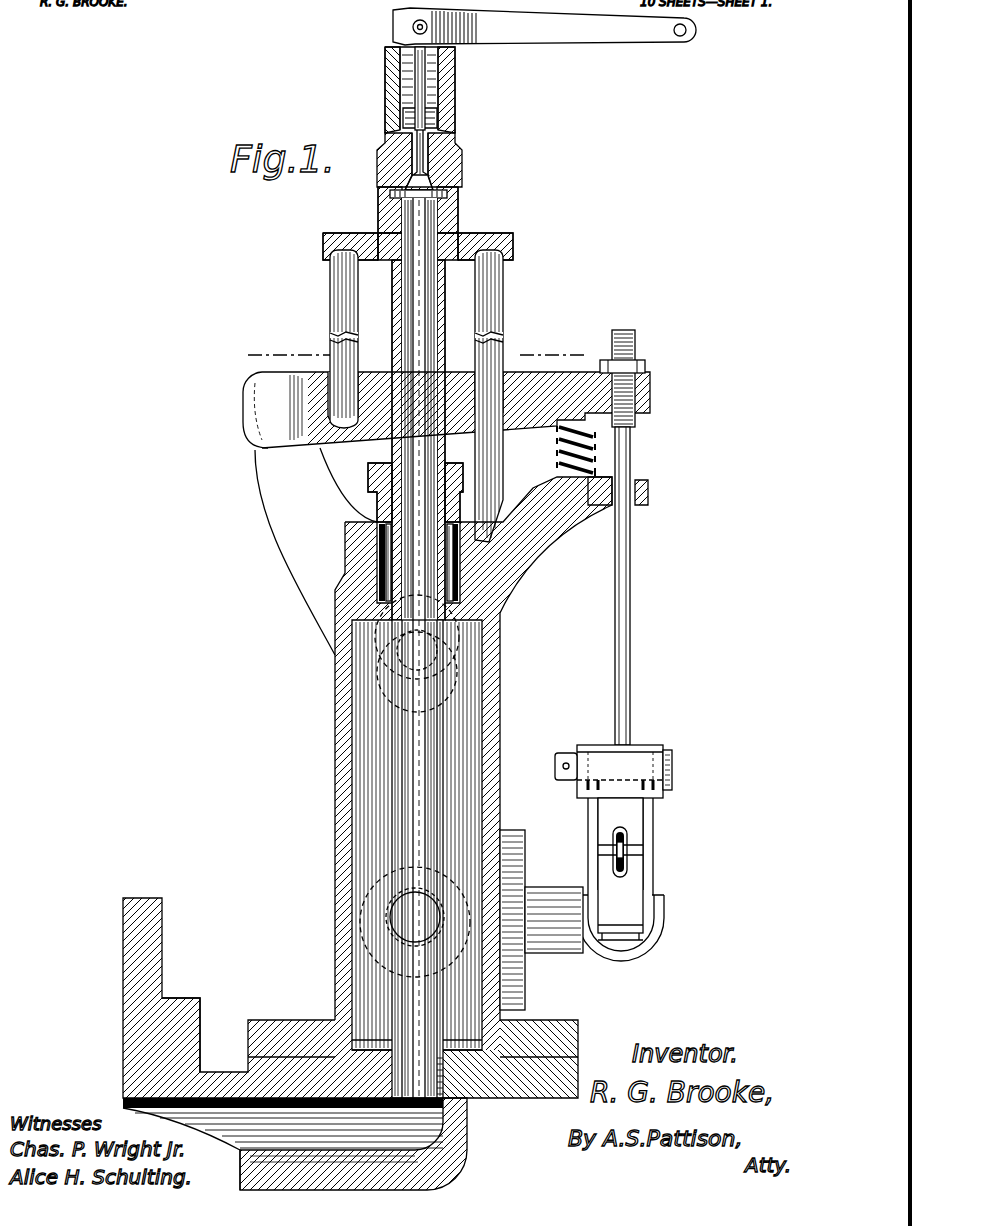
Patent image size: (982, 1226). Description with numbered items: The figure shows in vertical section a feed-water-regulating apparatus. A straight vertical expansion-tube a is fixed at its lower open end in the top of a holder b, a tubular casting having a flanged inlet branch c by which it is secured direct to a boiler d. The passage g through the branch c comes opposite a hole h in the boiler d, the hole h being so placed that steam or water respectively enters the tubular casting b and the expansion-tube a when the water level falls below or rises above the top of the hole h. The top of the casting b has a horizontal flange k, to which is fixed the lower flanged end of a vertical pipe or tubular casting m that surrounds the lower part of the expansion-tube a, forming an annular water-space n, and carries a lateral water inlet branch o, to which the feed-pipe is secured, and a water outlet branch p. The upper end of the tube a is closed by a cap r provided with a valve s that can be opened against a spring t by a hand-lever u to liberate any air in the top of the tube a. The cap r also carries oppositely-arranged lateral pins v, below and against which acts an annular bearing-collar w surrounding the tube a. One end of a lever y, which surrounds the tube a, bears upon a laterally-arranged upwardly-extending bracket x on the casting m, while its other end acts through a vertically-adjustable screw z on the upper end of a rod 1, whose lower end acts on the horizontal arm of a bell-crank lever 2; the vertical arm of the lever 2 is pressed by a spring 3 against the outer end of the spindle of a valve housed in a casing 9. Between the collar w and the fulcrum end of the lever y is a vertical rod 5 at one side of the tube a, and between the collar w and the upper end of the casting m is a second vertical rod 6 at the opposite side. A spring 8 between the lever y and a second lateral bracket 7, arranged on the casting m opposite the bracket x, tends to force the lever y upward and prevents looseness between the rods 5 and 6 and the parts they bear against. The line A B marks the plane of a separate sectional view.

The hand-lever u is at (544, 26).
The spring t is at (432, 100).
The valve s is at (417, 140).
The cap r is at (455, 170).
The annular bearing-collar w is at (349, 238).
The lateral pins v is at (452, 217).
The section line A B A is at (289, 341).
The section line A B is at (554, 341).
The vertical rod 5 is at (338, 356).
The second vertical rod 6 is at (494, 362).
The bracket x is at (316, 551).
The lever y is at (543, 400).
The vertically-adjustable screw z is at (636, 420).
The spring 8 is at (566, 465).
The second lateral bracket 7 is at (590, 506).
The casing 9 is at (450, 578).
The rod 1 is at (617, 612).
The water outlet branch p is at (478, 676).
The expansion-tube a is at (417, 859).
The annular water-space n is at (417, 836).
The vertical pipe or tubular casting m is at (340, 833).
The bell-crank lever 2 is at (620, 868).
The spring 3 is at (606, 843).
The water inlet branch o is at (362, 934).
The flanged inlet branch c is at (195, 1012).
The boiler d is at (267, 998).
The hole h is at (123, 1102).
The passage g is at (283, 1149).
The horizontal flange k is at (537, 1080).
The holder b is at (470, 1143).